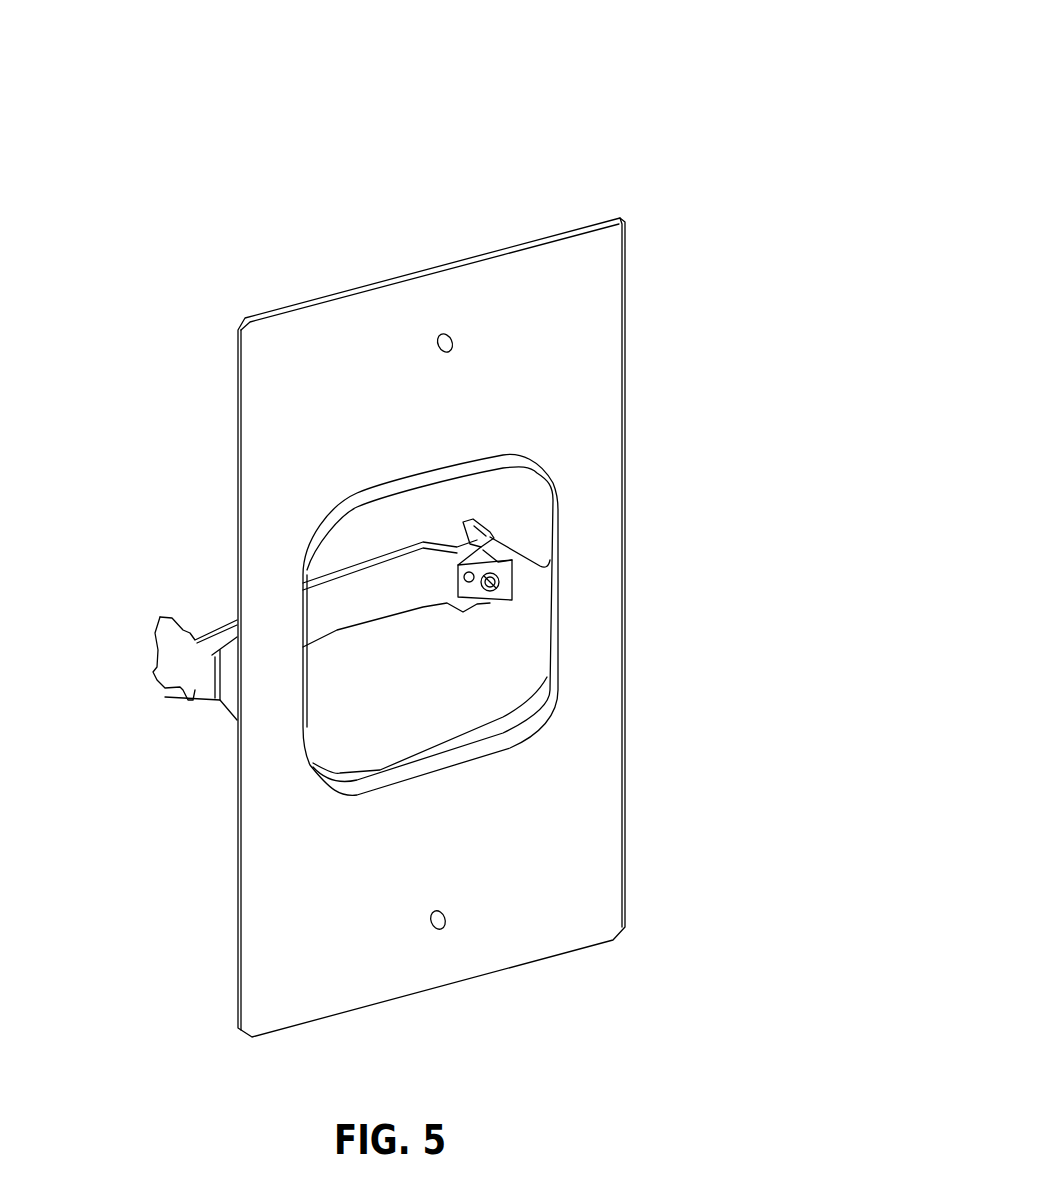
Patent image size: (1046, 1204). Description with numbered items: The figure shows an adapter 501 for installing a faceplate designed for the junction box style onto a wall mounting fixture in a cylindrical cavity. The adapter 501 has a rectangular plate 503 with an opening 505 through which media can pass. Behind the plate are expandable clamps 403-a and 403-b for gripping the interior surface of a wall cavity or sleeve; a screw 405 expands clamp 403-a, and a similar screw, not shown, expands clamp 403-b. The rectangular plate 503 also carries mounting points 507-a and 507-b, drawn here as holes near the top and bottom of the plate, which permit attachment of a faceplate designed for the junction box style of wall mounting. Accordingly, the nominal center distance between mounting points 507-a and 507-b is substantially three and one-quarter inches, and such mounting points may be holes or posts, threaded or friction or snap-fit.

The adapter 501 is at (628, 188).
The rectangular plate 503 is at (522, 820).
The opening 505 is at (300, 725).
The mounting point 507-a is at (440, 334).
The mounting point 507-b is at (430, 922).
The expandable clamp 403-a is at (483, 522).
The expandable clamp 403-b is at (160, 625).
The screw 405 is at (495, 588).